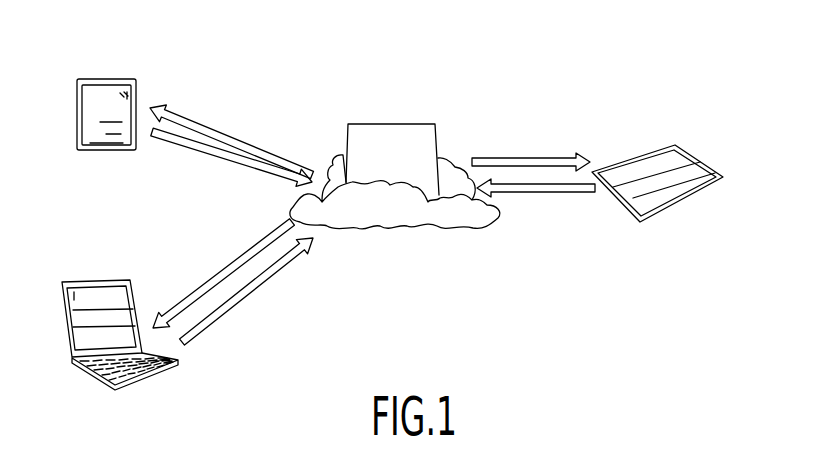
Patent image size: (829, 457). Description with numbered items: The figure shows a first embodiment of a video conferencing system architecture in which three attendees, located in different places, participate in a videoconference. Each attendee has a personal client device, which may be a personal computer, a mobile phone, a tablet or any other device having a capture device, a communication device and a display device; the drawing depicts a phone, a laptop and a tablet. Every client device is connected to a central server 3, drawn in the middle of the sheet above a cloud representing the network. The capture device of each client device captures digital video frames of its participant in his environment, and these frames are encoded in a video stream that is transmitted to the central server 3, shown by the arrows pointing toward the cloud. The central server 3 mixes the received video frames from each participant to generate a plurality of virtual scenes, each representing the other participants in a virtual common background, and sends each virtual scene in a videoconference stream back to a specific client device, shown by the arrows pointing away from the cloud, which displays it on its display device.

The central server 3 is at (418, 119).